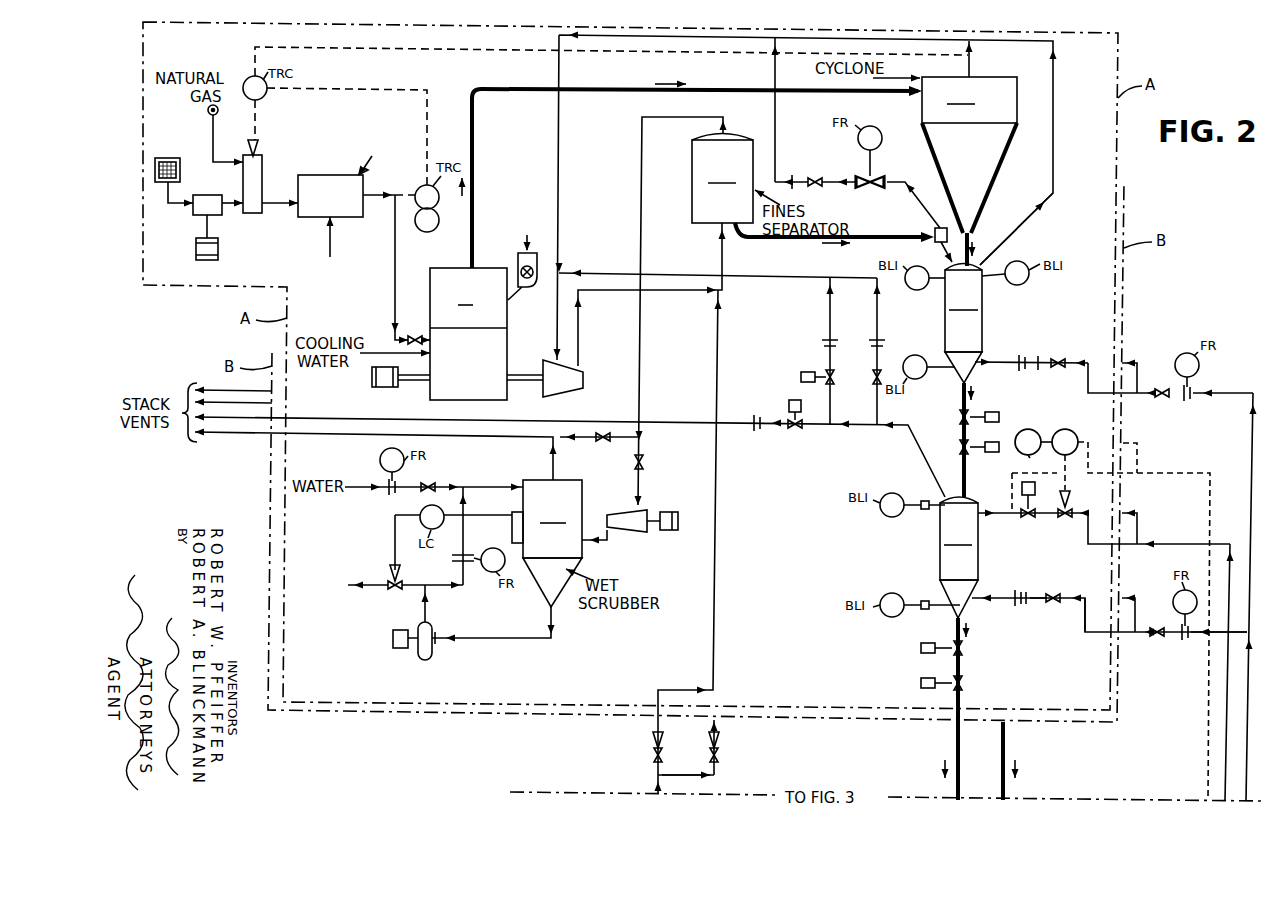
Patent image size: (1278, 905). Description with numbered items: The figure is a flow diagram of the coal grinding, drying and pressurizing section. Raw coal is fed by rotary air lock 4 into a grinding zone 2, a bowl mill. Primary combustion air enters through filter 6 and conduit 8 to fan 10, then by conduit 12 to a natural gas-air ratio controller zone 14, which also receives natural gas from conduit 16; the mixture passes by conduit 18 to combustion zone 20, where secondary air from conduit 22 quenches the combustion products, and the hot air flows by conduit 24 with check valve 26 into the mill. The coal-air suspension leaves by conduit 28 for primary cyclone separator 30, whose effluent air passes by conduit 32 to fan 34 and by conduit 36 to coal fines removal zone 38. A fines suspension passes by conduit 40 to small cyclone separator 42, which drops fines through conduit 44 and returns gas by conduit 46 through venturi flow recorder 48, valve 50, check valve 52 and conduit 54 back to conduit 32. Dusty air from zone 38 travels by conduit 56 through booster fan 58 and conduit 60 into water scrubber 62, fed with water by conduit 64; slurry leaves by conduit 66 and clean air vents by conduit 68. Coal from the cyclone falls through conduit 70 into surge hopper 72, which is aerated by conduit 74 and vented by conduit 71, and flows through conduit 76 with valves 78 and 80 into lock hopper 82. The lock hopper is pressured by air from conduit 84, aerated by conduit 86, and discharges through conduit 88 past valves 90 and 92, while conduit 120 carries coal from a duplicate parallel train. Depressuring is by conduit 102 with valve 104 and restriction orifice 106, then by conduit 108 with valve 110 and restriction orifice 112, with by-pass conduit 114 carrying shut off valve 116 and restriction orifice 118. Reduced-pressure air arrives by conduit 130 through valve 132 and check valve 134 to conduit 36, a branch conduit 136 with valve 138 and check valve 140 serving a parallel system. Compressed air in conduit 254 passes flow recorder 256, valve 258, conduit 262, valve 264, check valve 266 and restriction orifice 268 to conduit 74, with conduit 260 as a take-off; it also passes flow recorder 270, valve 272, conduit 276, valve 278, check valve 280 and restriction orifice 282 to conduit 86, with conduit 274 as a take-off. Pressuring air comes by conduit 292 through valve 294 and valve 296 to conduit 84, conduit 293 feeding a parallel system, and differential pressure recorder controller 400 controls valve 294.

The grinding zone 2 is at (468, 334).
The rotary air lock 4 is at (519, 293).
The filter 6 is at (181, 168).
The conduit 8 is at (168, 205).
The fan or compressor 10 is at (201, 196).
The conduit 12 is at (226, 207).
The natural gas-air ratio controller zone 14 is at (262, 171).
The conduit 16 is at (213, 139).
The conduit 18 is at (271, 207).
The combustion zone 20 is at (337, 180).
The conduit 22 is at (330, 243).
The conduit 24 is at (395, 243).
The check valve 26 is at (415, 336).
The conduit 28 is at (509, 87).
The primary cyclone separator 30 is at (969, 171).
The conduit 32 is at (559, 157).
The fan 34 is at (570, 391).
The conduit 36 is at (579, 321).
The coal fines removal zone 38 is at (722, 179).
The conduit 40 is at (783, 239).
The small cyclone separator 42 is at (933, 226).
The conduit 44 is at (935, 259).
The conduit 46 is at (915, 190).
The venturi flow recorder 48 is at (868, 189).
The valve 50 is at (821, 178).
The check valve 52 is at (796, 189).
The conduit 54 is at (775, 118).
The conduit 56 is at (642, 126).
The booster fan 58 is at (631, 533).
The conduit 60 is at (599, 548).
The water scrubber 62 is at (547, 543).
The conduit 64 is at (369, 490).
The conduit 66 is at (553, 620).
The conduit 68 is at (555, 458).
The conduit 70 is at (971, 252).
The conduit 71 is at (1018, 229).
The surge hopper 72 is at (963, 324).
The conduit 74 is at (1000, 360).
The conduit 76 is at (958, 393).
The valve 78 is at (957, 417).
The valve 80 is at (968, 454).
The lock hopper 82 is at (959, 557).
The conduit 84 is at (1002, 508).
The conduit 86 is at (988, 597).
The conduit 88 is at (952, 626).
The valve 90 is at (965, 648).
The valve 92 is at (965, 683).
The conduit 102 is at (916, 453).
The valve 104 is at (795, 431).
The restriction orifice 106 is at (761, 418).
The conduit 108 is at (828, 298).
The valve 110 is at (826, 371).
The restriction orifice 112 is at (826, 342).
The by-pass conduit 114 is at (879, 313).
The shut off valve 116 is at (873, 385).
The restriction orifice 118 is at (881, 343).
The conduit 120 is at (1008, 753).
The conduit 130 is at (656, 785).
The valve 132 is at (652, 755).
The check valve 134 is at (652, 738).
The branch conduit 136 is at (716, 768).
The valve 138 is at (720, 755).
The check valve 140 is at (720, 739).
The conduit 254 is at (1251, 438).
The flow recorder 256 is at (1193, 388).
The valve 258 is at (1163, 400).
The conduit 260 is at (1137, 361).
The conduit 262 is at (1086, 391).
The valve 264 is at (1060, 359).
The check valve 266 is at (1040, 371).
The restriction orifice 268 is at (1020, 371).
The flow recorder 270 is at (1185, 643).
The valve 272 is at (1155, 638).
The conduit 274 is at (1136, 605).
The conduit 276 is at (1085, 636).
The valve 278 is at (1050, 605).
The check valve 280 is at (1053, 594).
The restriction orifice 282 is at (1016, 606).
The conduit 292 is at (1182, 547).
The conduit 293 is at (1145, 510).
The valve 294 is at (1063, 520).
The valve 296 is at (1026, 519).
The differential pressure recorder controller 400 is at (1061, 431).